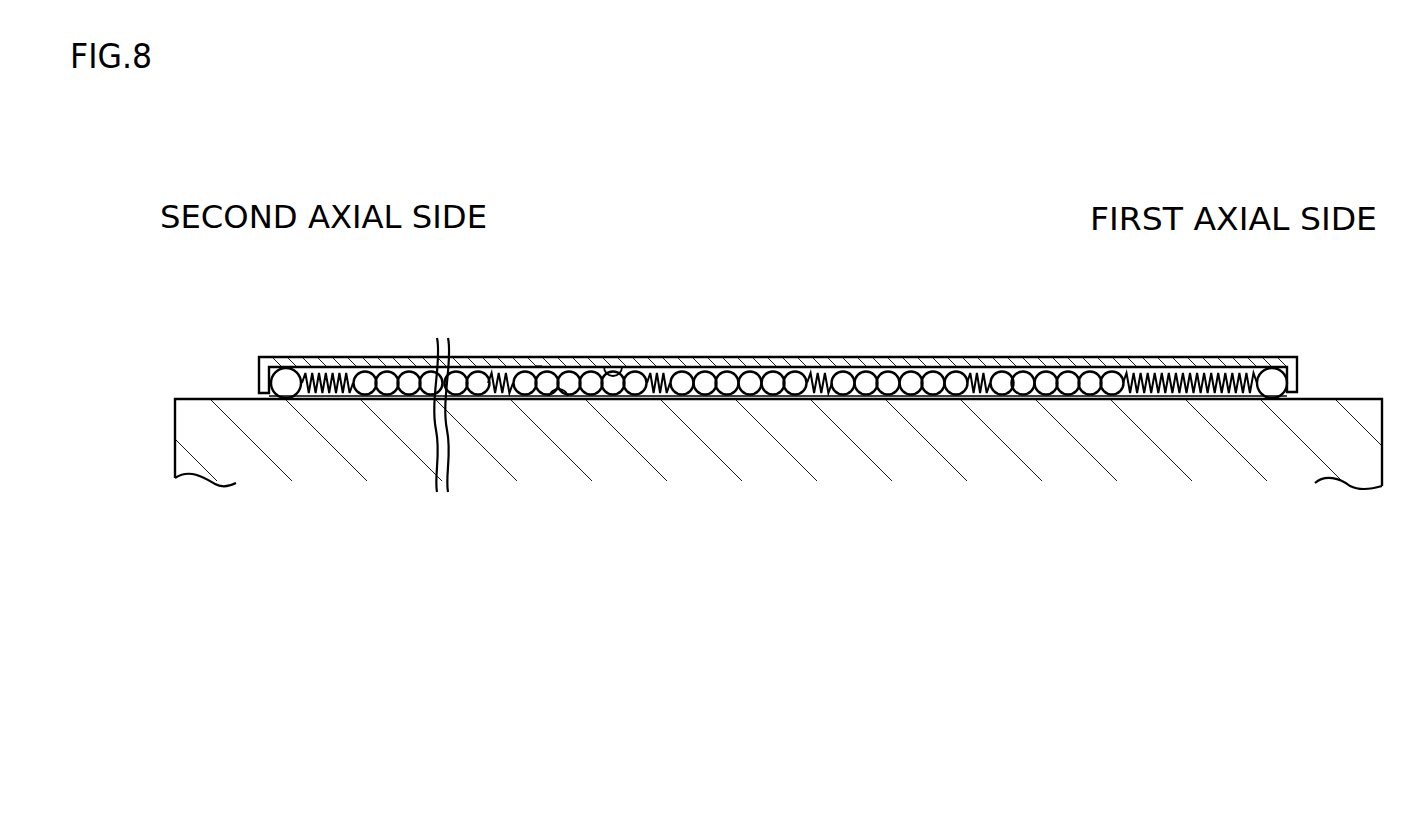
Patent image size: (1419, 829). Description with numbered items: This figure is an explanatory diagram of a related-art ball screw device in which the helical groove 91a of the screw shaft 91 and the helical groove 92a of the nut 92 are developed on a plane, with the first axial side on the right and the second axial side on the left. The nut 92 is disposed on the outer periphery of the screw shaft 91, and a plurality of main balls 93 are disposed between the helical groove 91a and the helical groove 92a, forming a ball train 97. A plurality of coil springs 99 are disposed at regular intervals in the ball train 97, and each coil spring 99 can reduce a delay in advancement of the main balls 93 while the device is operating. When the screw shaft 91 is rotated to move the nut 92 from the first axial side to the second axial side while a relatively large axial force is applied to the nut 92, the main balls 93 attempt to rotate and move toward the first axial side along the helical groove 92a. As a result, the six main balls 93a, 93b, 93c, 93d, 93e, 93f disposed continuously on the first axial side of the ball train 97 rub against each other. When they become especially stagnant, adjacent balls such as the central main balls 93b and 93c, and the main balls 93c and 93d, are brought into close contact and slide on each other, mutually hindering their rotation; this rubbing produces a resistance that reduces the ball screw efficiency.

The screw shaft 91 is at (363, 425).
The helical groove of the screw shaft 91a is at (551, 398).
The nut 92 is at (713, 360).
The helical groove of the nut 92a is at (612, 376).
The main balls 93 is at (364, 372).
The main ball 93a is at (1112, 380).
The main ball 93b is at (1090, 384).
The main ball 93c is at (1067, 380).
The main ball 93d is at (1046, 384).
The main ball 93e is at (1023, 380).
The main ball 93f is at (1002, 384).
The ball train 97 is at (539, 368).
The coil springs 99 is at (491, 398).